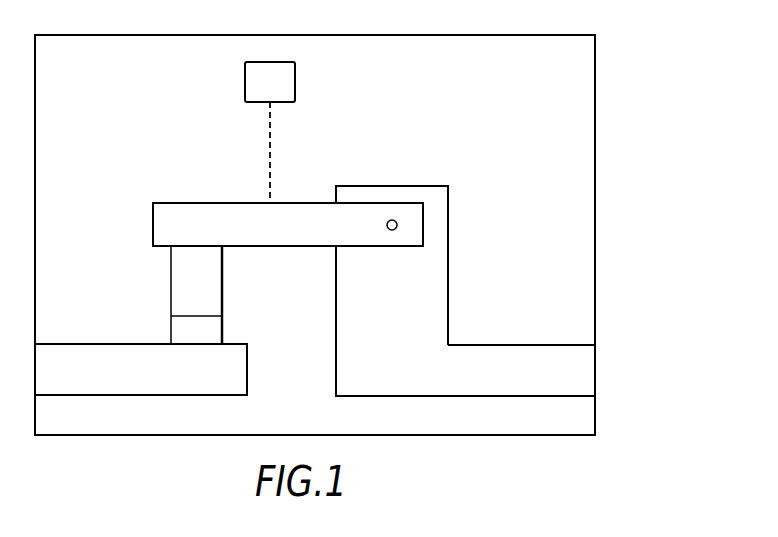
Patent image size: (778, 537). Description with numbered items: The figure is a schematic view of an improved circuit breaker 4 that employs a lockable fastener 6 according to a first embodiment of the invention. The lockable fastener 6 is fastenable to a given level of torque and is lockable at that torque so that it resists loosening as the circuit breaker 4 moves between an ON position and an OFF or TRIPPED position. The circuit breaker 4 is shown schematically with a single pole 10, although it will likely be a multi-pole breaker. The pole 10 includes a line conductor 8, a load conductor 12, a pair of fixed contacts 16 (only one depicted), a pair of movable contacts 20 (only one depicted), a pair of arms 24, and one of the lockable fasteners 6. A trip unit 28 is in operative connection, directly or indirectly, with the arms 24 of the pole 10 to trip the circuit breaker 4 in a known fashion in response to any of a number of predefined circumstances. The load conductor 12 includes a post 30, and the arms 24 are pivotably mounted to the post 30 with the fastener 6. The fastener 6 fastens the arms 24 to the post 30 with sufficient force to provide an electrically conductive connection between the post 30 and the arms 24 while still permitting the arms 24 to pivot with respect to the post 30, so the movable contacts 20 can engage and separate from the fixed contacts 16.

The circuit breaker 4 is at (620, 80).
The lockable fastener 6 is at (395, 207).
The line conductor 8 is at (113, 344).
The pole 10 is at (456, 182).
The load conductor 12 is at (492, 345).
The fixed contacts 16 is at (222, 330).
The movable contacts 20 is at (222, 262).
The arms 24 is at (303, 202).
The trip unit 28 is at (245, 80).
The post 30 is at (448, 248).